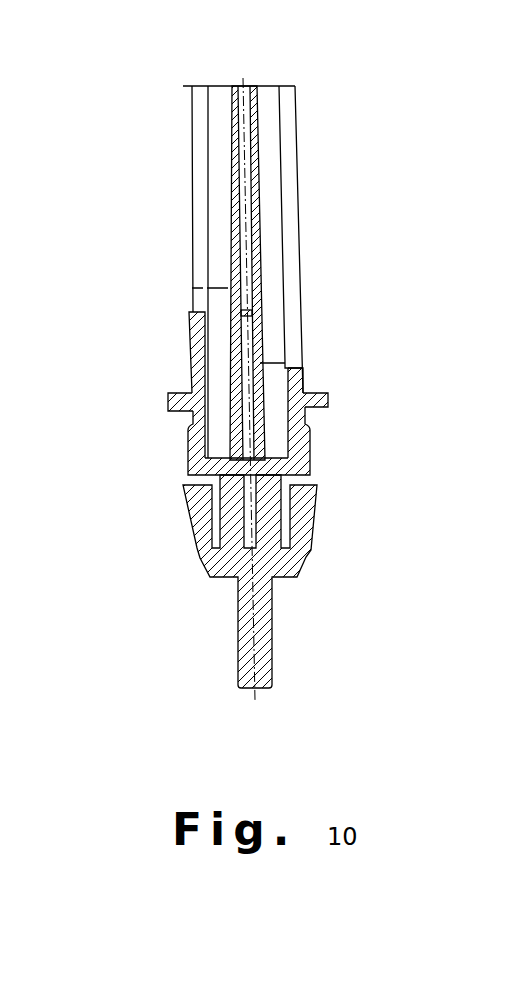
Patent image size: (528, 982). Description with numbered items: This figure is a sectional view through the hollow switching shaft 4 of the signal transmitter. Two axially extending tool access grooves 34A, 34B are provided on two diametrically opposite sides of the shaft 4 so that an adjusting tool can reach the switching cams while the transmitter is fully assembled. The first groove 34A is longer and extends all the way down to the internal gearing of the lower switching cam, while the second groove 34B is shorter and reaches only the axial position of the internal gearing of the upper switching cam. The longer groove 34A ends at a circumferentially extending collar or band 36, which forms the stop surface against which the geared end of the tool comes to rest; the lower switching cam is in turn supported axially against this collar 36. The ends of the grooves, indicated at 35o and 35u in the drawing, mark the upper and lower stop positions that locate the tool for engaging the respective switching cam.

The hollow switching shaft 4 is at (240, 79).
The first tool access groove 34A is at (270, 185).
The second tool access groove 34B is at (218, 182).
The upper bearing section 35o is at (191, 312).
The lower bearing section 35u is at (302, 392).
The circumferential collar 36 is at (329, 401).